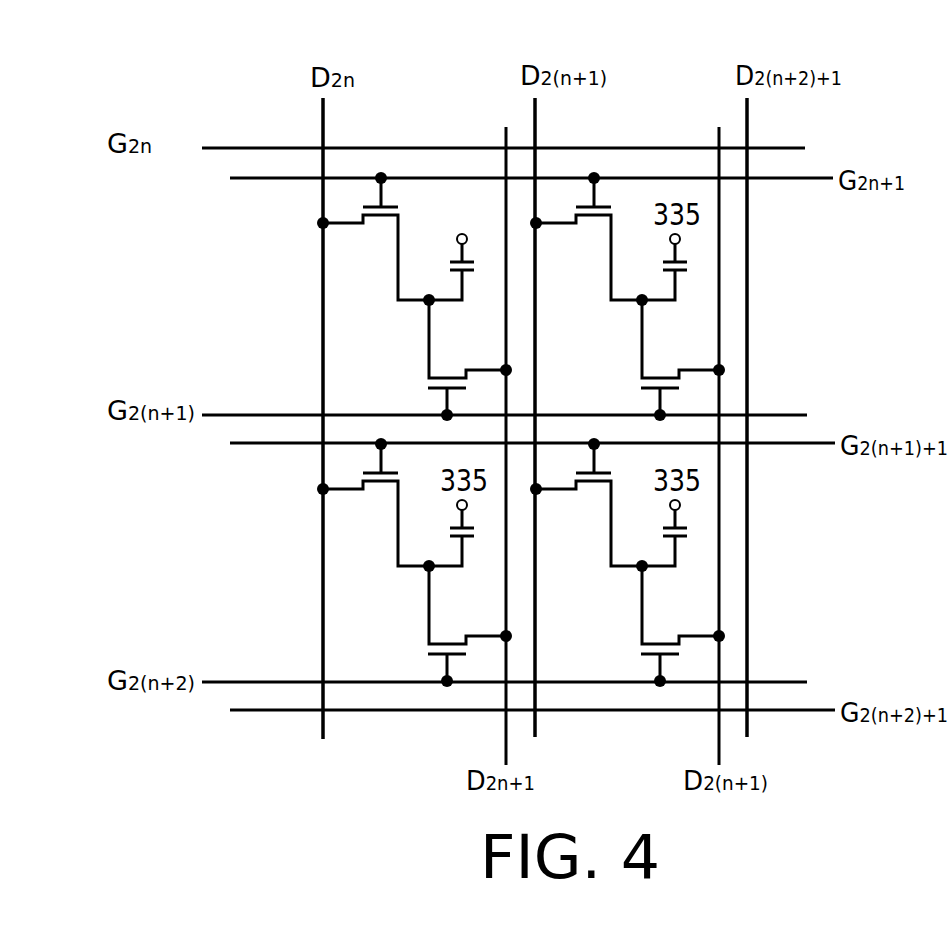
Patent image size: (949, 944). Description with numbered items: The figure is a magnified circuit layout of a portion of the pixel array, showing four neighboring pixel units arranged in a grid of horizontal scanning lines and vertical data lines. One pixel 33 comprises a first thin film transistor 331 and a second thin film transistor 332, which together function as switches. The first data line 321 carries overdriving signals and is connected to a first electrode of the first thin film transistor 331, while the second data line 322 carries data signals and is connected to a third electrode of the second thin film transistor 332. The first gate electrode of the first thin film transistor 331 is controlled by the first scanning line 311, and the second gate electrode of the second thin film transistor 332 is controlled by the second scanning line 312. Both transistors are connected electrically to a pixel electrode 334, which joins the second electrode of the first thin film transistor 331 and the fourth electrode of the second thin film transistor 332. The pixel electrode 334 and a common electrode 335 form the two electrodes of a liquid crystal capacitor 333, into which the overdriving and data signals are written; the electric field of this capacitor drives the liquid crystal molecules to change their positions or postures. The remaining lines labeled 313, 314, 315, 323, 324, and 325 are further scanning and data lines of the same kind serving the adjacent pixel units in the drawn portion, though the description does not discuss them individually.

The first scanning line 311 is at (807, 178).
The second scanning line 312 is at (250, 148).
The gate line G2(n+1)+1 313 is at (808, 443).
The gate line G2(n+2) 314 is at (252, 682).
The gate line G2(n+2)+1 315 is at (808, 710).
The first data line 321 is at (323, 112).
The second data line 322 is at (506, 732).
The data line D2(n+1) 323 is at (535, 112).
The data line D2(n+1) (second) 324 is at (720, 732).
The data line D2(n+2)+1 325 is at (747, 113).
The pixel 33 is at (318, 252).
The first thin film transistor 331 is at (357, 211).
The second thin film transistor 332 is at (422, 383).
The liquid crystal capacitor 333 is at (442, 192).
The pixel electrode 334 is at (453, 302).
The common electrode 335 is at (464, 220).